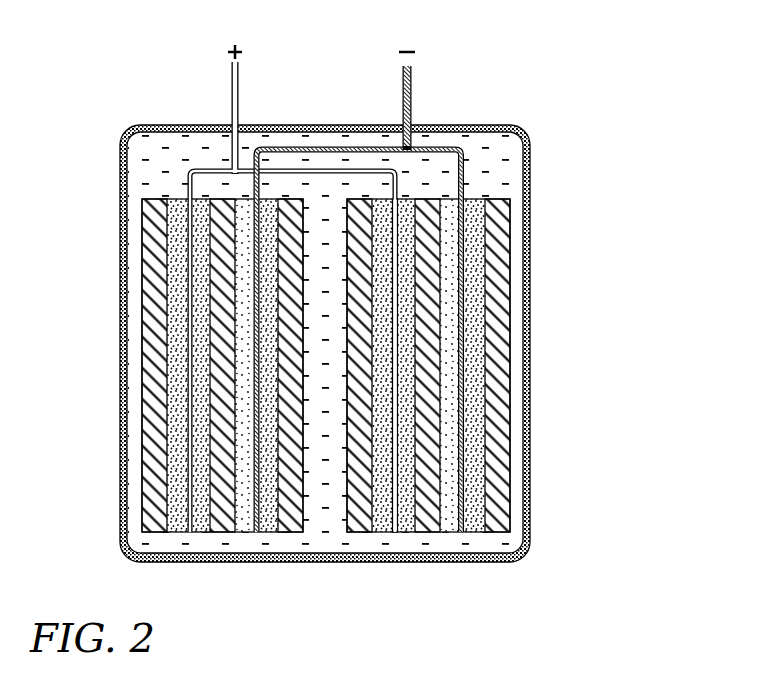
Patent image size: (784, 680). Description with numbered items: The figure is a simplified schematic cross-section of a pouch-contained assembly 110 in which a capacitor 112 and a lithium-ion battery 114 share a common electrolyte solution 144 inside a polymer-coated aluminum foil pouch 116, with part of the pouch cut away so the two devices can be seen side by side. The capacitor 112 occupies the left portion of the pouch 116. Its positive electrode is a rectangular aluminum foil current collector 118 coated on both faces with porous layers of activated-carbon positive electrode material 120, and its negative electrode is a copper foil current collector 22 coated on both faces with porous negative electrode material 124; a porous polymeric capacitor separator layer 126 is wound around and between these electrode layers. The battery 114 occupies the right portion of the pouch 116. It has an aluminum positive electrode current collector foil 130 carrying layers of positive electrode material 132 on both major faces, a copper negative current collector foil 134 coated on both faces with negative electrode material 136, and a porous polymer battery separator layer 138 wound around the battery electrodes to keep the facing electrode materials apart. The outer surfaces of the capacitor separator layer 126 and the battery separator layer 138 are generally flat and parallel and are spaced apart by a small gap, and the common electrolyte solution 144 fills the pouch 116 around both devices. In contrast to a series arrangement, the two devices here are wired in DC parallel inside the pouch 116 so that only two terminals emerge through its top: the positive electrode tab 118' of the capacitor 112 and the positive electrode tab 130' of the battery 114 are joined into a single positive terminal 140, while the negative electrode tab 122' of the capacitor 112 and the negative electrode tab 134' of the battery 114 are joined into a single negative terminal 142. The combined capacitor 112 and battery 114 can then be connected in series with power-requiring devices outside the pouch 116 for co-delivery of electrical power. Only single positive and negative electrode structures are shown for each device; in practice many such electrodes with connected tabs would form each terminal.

The pouch-contained assembly 110 is at (490, 90).
The capacitor 112 is at (205, 541).
The battery 114 is at (442, 544).
The pouch 116 is at (536, 188).
The aluminum foil current collector 118 is at (132, 365).
The positive electrode tab 118' is at (236, 302).
The positive electrode material 120 is at (207, 207).
The negative electrode tab 122' is at (308, 309).
The negative electrode material 124 is at (245, 352).
The capacitor separator layer 126 is at (148, 450).
The positive electrode current collector foil 130 is at (440, 294).
The positive electrode tab 130' is at (362, 294).
The positive electrode material 132 is at (405, 440).
The negative current collector foil 134 is at (516, 365).
The negative electrode tab 134' is at (480, 309).
The negative electrode material 136 is at (448, 440).
The battery separator layer 138 is at (507, 478).
The positive terminal 140 is at (233, 62).
The negative terminal 142 is at (413, 68).
The common electrolyte solution 144 is at (330, 495).
The copper foil current collector 22 is at (253, 437).